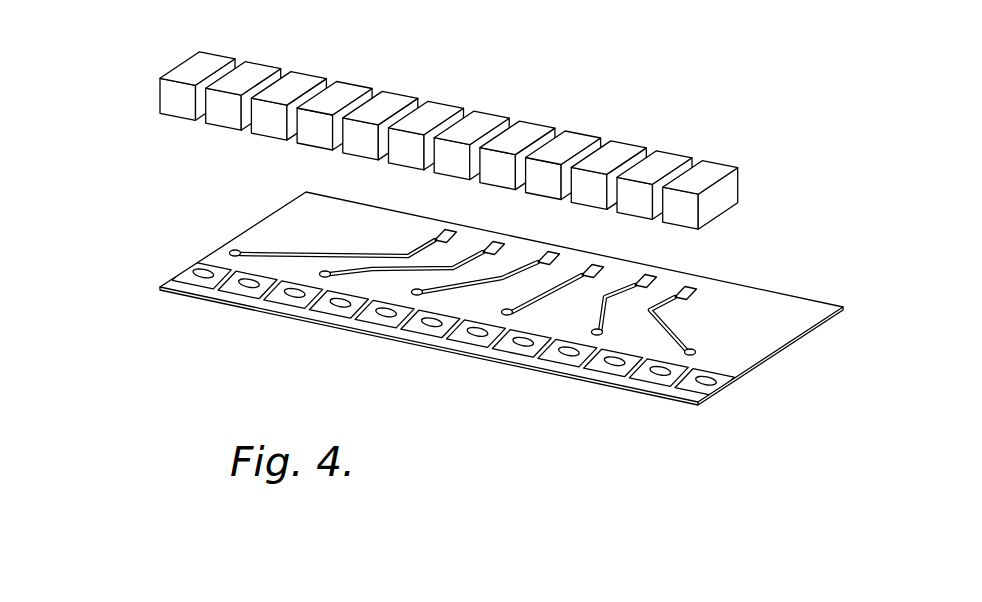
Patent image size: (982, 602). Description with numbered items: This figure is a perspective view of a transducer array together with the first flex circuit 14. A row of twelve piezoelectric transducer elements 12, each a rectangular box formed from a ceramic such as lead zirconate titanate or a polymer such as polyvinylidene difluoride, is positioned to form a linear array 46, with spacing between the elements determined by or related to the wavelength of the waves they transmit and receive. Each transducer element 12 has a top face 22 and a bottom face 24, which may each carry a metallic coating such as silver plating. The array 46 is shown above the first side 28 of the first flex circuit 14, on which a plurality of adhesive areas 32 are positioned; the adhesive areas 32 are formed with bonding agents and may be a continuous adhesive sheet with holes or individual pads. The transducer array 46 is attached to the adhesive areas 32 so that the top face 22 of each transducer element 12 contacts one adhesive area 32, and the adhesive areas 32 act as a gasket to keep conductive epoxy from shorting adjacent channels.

The transducer element 12 is at (492, 137).
The first flex circuit 14 is at (465, 334).
The top face 22 is at (734, 221).
The bottom face 24 is at (703, 172).
The first side 28 is at (465, 297).
The adhesive areas 32 is at (227, 298).
The linear array 46 is at (63, 282).